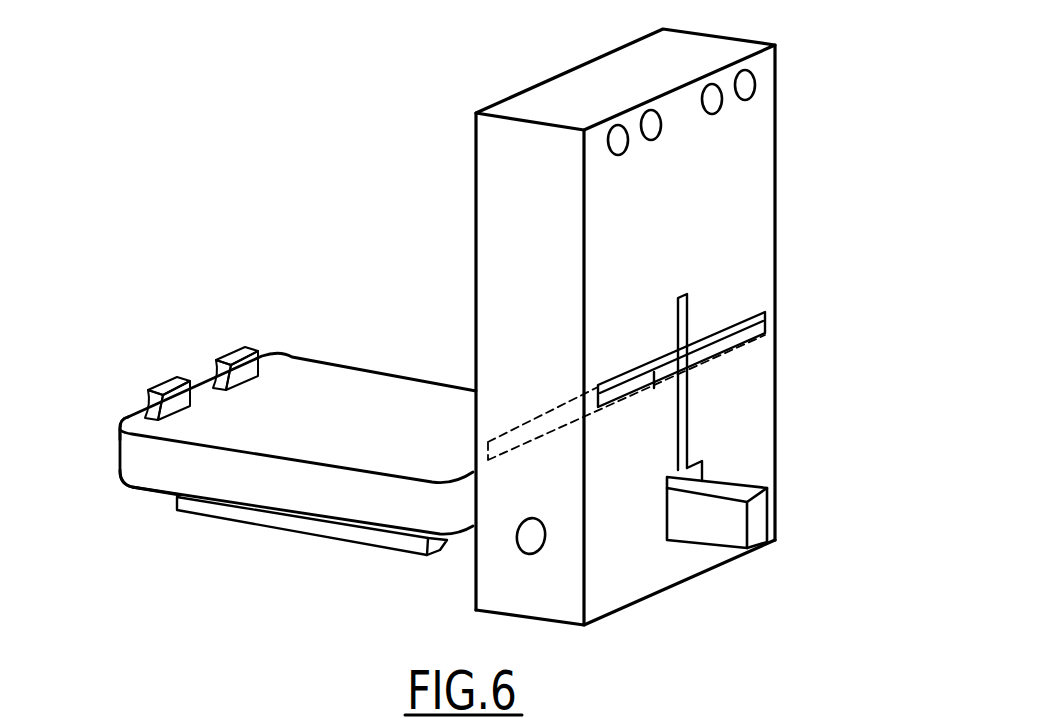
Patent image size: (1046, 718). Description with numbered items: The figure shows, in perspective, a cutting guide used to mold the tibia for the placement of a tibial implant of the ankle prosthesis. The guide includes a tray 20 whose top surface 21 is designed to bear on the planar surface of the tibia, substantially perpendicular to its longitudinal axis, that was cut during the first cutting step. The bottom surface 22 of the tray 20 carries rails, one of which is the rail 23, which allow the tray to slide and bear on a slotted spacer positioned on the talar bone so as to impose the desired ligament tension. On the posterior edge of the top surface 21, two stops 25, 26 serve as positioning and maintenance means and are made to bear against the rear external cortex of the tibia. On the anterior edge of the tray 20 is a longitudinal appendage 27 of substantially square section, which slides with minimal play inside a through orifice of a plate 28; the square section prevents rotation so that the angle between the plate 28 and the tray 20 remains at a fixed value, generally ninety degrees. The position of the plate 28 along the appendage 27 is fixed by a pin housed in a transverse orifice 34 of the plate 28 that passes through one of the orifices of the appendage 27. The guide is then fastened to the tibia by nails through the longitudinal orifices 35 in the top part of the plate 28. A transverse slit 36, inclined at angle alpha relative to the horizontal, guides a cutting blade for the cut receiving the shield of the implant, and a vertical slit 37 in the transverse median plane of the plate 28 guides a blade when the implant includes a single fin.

The tray 20 is at (103, 416).
The top surface 21 is at (362, 402).
The bottom surface 22 is at (135, 490).
The rail 23 is at (287, 522).
The stop 25 is at (173, 400).
The stop 26 is at (238, 368).
The longitudinal appendage 27 is at (728, 512).
The plate 28 is at (735, 212).
The transverse orifice 34 is at (525, 538).
The longitudinal orifices 35 is at (750, 82).
The transverse slit 36 is at (750, 330).
The vertical slit 37 is at (683, 415).